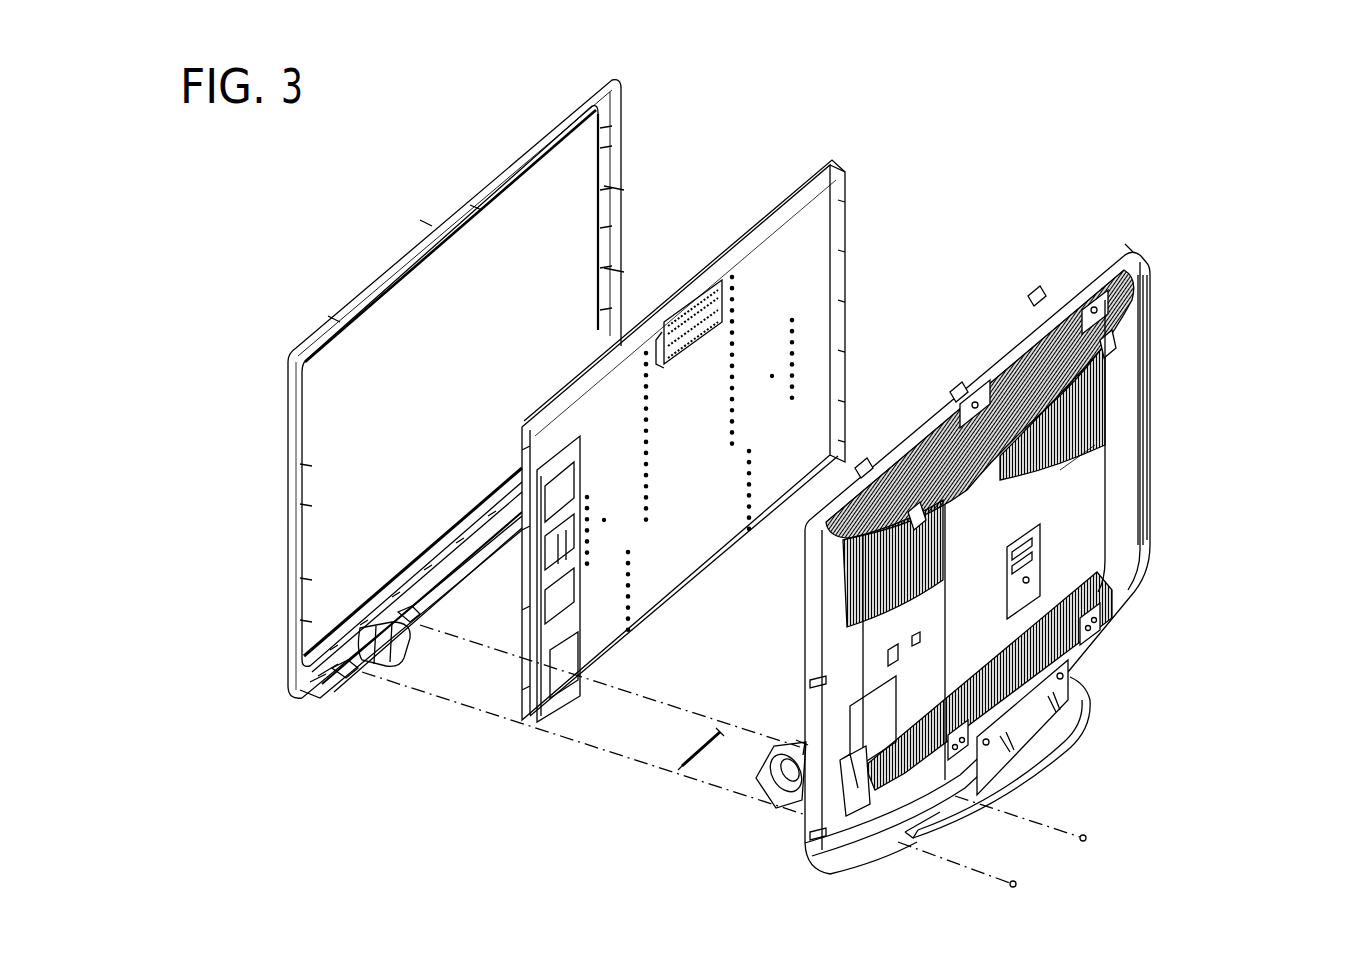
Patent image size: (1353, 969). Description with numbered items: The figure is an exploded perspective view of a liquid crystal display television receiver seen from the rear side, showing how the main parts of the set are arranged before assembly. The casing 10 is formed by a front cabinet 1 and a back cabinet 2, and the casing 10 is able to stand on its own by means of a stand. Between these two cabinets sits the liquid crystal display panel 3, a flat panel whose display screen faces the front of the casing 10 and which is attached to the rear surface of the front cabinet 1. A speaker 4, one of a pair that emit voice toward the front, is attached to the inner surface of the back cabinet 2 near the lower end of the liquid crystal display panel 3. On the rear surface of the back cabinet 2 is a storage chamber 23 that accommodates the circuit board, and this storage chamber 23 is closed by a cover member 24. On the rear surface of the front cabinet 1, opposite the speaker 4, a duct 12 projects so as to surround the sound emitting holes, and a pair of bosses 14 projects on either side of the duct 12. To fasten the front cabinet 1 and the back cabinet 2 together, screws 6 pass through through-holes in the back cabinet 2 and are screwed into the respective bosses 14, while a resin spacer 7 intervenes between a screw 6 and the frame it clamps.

The casing 10 is at (1038, 82).
The front cabinet 1 is at (618, 108).
The back cabinet 2 is at (1127, 252).
The liquid crystal display panel 3 is at (847, 236).
The speaker 4 is at (794, 754).
The screw 6 is at (1087, 839).
The spacer 7 is at (680, 768).
The duct 12 is at (372, 626).
The boss 14 is at (404, 614).
The storage chamber 23 is at (1105, 470).
The cover member 24 is at (1090, 514).